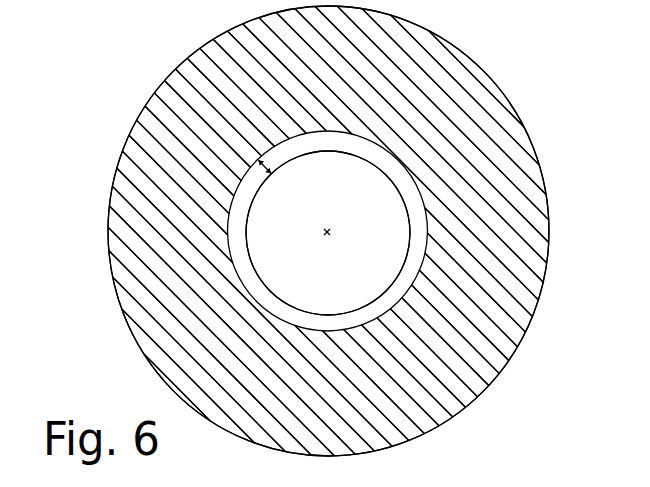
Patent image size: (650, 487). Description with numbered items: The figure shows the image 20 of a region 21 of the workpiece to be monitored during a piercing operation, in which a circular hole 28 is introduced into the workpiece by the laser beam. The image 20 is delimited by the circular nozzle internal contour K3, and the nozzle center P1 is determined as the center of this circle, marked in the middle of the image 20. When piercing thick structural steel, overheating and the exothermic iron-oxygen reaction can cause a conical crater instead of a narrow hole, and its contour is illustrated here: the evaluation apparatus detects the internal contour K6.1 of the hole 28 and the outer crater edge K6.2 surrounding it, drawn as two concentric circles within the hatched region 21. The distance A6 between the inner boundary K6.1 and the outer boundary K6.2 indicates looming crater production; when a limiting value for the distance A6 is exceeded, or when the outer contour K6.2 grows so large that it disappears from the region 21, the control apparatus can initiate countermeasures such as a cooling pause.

The image 20 is at (165, 58).
The region 21 is at (482, 372).
The circular hole 28 is at (280, 255).
The nozzle internal contour K3 is at (459, 50).
The internal contour of the hole K6.1 is at (395, 170).
The outer crater edge K6.2 is at (427, 242).
The distance between inner and outer boundary A6 is at (243, 178).
The nozzle center P1 is at (328, 246).